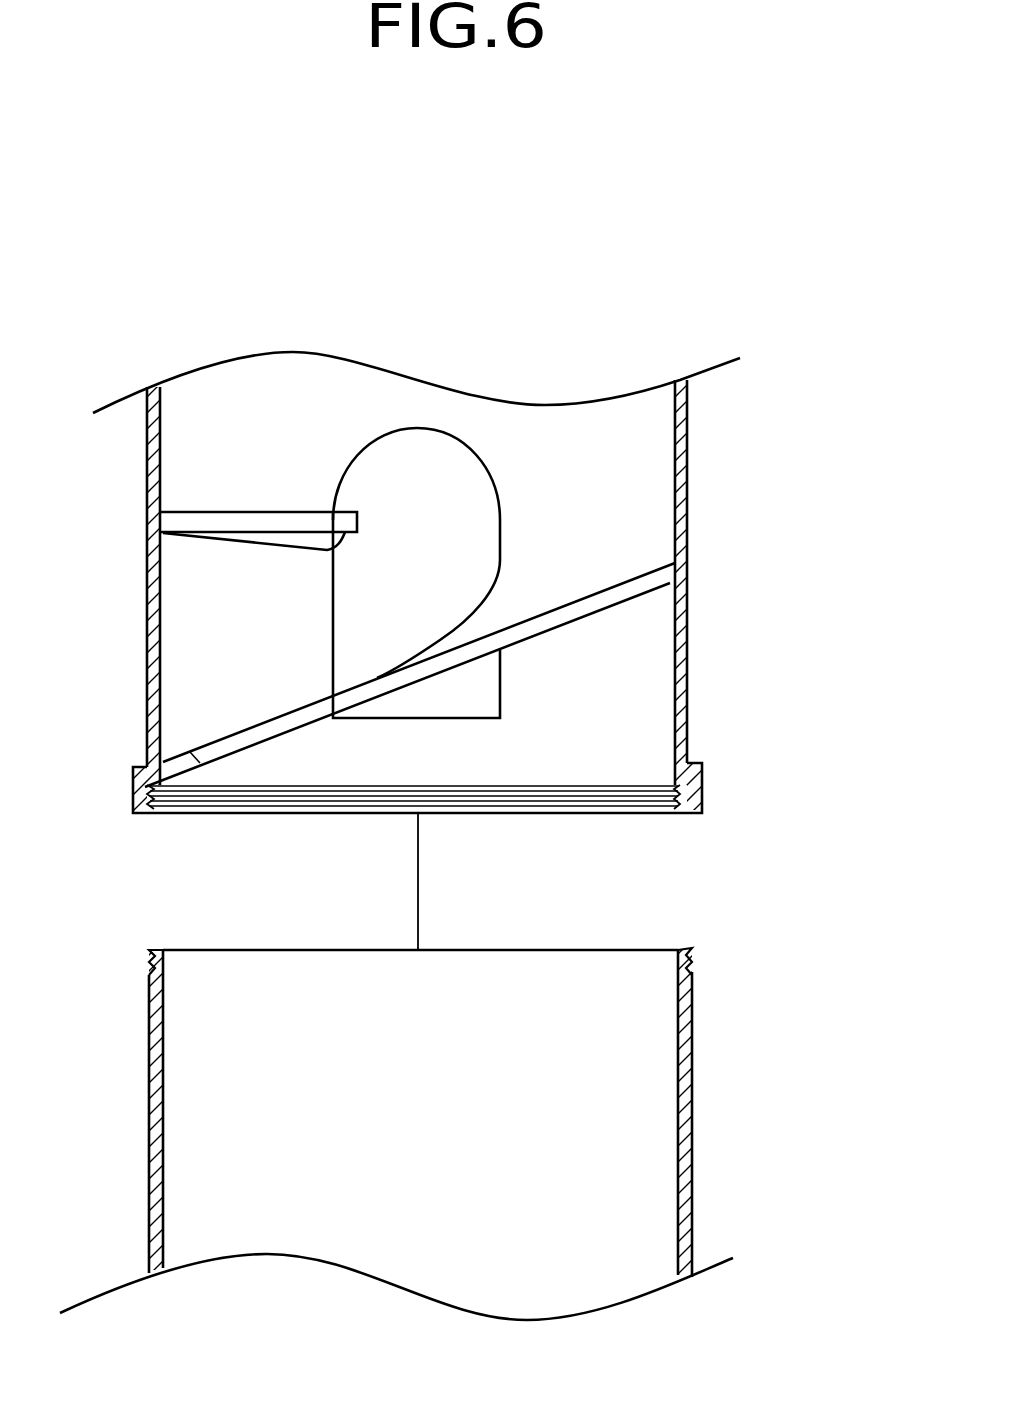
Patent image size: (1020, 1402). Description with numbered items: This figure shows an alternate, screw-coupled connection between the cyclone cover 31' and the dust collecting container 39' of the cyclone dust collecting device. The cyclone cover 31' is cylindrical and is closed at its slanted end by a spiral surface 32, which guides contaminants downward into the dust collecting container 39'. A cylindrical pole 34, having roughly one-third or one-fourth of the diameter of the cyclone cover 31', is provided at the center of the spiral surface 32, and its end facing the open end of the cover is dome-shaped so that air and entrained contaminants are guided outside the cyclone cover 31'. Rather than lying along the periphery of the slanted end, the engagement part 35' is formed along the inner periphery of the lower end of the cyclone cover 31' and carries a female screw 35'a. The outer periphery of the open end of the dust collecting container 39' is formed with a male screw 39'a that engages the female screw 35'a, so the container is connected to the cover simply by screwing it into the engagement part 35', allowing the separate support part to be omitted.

The cyclone cover 31' is at (487, 568).
The spiral surface 32 is at (593, 566).
The cylindrical pole 34 is at (447, 442).
The engagement part 35' is at (490, 773).
The female screw 35'a is at (513, 821).
The dust collecting container 39' is at (473, 1135).
The male screw 39'a is at (512, 952).